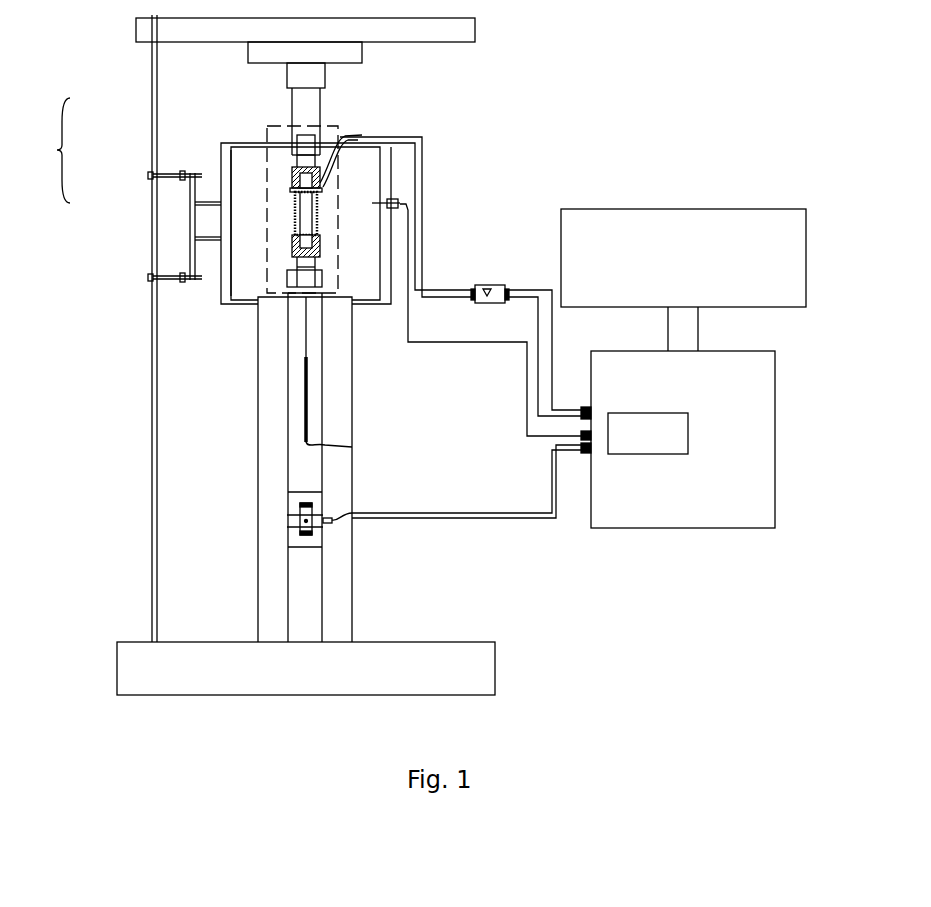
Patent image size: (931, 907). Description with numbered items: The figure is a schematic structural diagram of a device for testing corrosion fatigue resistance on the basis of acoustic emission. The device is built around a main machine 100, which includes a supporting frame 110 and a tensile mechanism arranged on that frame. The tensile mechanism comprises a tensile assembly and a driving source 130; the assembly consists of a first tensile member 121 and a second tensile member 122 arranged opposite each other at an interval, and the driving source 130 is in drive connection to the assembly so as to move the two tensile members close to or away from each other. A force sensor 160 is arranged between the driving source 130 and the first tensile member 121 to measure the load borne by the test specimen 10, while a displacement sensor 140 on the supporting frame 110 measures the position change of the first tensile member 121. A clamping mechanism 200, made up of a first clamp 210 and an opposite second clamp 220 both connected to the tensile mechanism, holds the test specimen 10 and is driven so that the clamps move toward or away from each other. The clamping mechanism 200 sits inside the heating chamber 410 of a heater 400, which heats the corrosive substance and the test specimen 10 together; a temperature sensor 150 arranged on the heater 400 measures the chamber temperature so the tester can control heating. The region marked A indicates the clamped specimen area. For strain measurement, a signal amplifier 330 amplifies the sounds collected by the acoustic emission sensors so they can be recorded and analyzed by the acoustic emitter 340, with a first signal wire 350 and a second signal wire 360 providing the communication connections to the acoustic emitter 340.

The test specimen 10 is at (308, 213).
The main machine 100 is at (157, 458).
The supporting frame 110 is at (220, 662).
The first tensile member 121 is at (318, 362).
The second tensile member 122 is at (305, 110).
The driving source 130 is at (310, 535).
The displacement sensor 140 is at (307, 408).
The temperature sensor 150 is at (388, 202).
The force sensor 160 is at (335, 520).
The clamping mechanism 200 is at (45, 150).
The first clamp 210 is at (295, 245).
The second clamp 220 is at (295, 175).
The signal amplifier 330 is at (503, 290).
The acoustic emitter 340 is at (745, 478).
The first signal wire 350 is at (442, 298).
The second signal wire 360 is at (423, 210).
The heater 400 is at (221, 272).
The heating chamber 410 is at (240, 275).
The detail region A is at (265, 126).